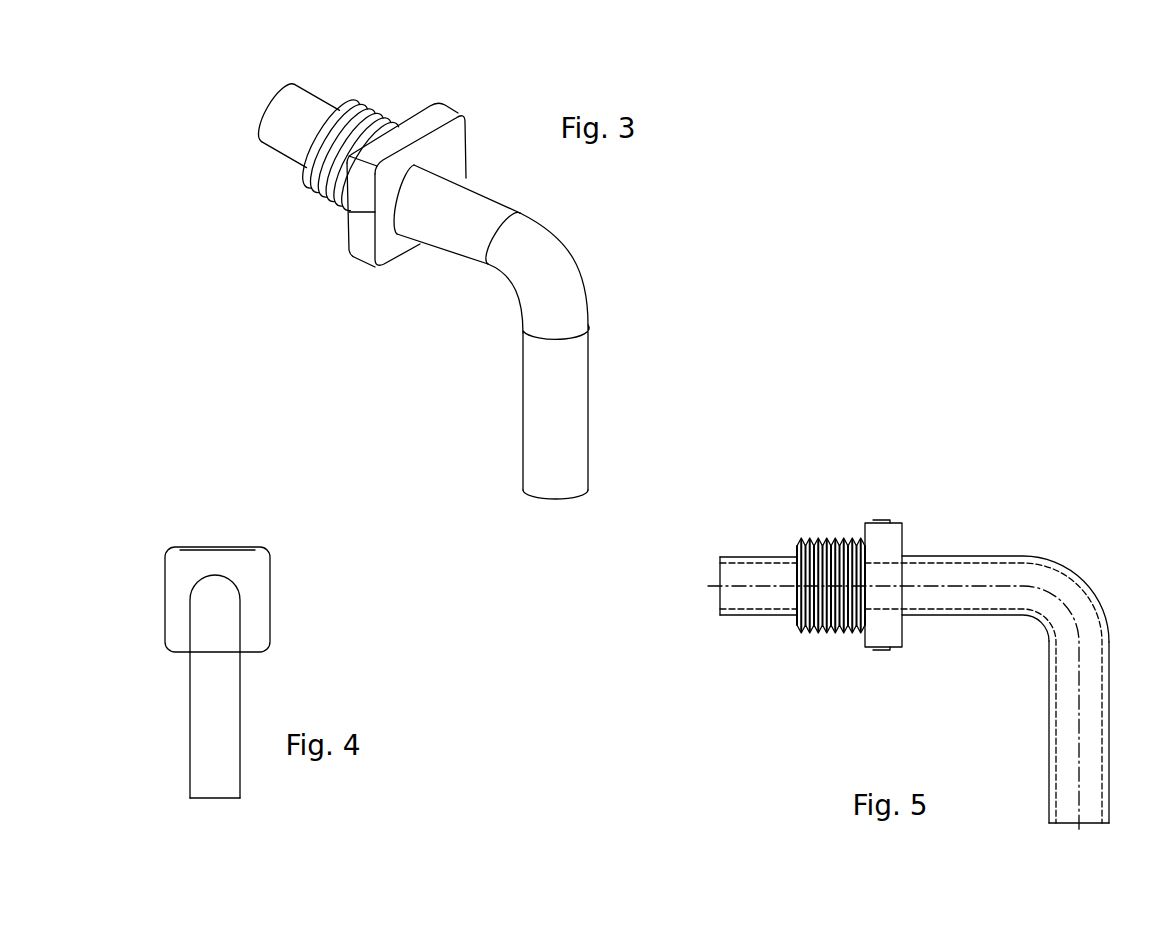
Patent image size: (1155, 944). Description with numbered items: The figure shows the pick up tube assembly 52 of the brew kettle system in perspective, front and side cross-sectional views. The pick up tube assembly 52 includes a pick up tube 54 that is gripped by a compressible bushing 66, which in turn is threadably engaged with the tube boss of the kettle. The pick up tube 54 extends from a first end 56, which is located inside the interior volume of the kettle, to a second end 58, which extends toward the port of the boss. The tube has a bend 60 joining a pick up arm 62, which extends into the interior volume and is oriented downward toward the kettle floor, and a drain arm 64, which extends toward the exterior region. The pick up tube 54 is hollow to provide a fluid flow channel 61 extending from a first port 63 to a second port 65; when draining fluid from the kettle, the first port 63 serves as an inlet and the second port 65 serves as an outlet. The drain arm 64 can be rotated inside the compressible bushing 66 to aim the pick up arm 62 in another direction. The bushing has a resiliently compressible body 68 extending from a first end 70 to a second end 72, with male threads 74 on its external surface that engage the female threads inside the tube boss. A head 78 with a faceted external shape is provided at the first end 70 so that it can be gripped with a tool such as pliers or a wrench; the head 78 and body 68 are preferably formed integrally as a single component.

In FIG. 3, the pick up tube assembly 52 is at (155, 154).
In FIG. 4, the pick up tube assembly 52 is at (108, 513).
In FIG. 5, the pick up tube assembly 52 is at (988, 485).
In FIG. 3, the pick up tube 54 is at (514, 414).
In FIG. 4, the pick up tube 54 is at (180, 722).
In FIG. 5, the pick up tube 54 is at (939, 546).
In FIG. 3, the first end 56 is at (557, 500).
In FIG. 4, the first end 56 is at (215, 800).
In FIG. 5, the first end 56 is at (1070, 828).
In FIG. 3, the second end 58 is at (265, 105).
In FIG. 5, the second end 58 is at (723, 598).
In FIG. 3, the bend 60 is at (560, 258).
In FIG. 4, the bend 60 is at (225, 590).
In FIG. 5, the bend 60 is at (1057, 577).
In FIG. 5, the fluid flow channel 61 is at (732, 605).
In FIG. 3, the pick up arm 62 is at (568, 393).
In FIG. 4, the pick up arm 62 is at (220, 688).
In FIG. 5, the pick up arm 62 is at (1057, 735).
In FIG. 5, the first port 63 is at (1090, 820).
In FIG. 3, the drain arm 64 is at (278, 148).
In FIG. 5, the drain arm 64 is at (763, 557).
In FIG. 5, the second port 65 is at (728, 571).
In FIG. 3, the compressible bushing 66 is at (349, 268).
In FIG. 4, the compressible bushing 66 is at (202, 540).
In FIG. 5, the compressible bushing 66 is at (858, 530).
In FIG. 3, the resiliently compressible body 68 is at (370, 103).
In FIG. 5, the resiliently compressible body 68 is at (834, 633).
In FIG. 3, the first end 70 is at (357, 100).
In FIG. 5, the first end 70 is at (797, 543).
In FIG. 3, the second end 72 is at (460, 132).
In FIG. 5, the second end 72 is at (905, 624).
In FIG. 3, the male threads 74 is at (325, 194).
In FIG. 5, the male threads 74 is at (807, 633).
In FIG. 3, the head 78 is at (387, 257).
In FIG. 4, the head 78 is at (245, 557).
In FIG. 5, the head 78 is at (882, 633).